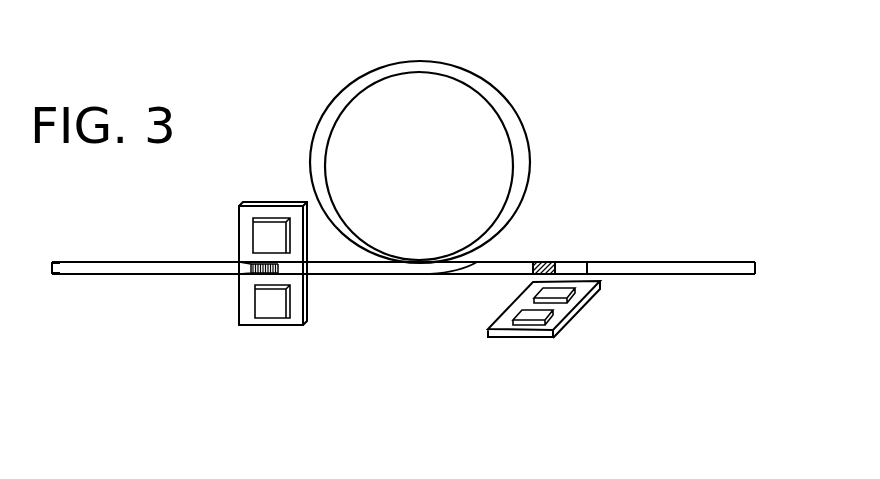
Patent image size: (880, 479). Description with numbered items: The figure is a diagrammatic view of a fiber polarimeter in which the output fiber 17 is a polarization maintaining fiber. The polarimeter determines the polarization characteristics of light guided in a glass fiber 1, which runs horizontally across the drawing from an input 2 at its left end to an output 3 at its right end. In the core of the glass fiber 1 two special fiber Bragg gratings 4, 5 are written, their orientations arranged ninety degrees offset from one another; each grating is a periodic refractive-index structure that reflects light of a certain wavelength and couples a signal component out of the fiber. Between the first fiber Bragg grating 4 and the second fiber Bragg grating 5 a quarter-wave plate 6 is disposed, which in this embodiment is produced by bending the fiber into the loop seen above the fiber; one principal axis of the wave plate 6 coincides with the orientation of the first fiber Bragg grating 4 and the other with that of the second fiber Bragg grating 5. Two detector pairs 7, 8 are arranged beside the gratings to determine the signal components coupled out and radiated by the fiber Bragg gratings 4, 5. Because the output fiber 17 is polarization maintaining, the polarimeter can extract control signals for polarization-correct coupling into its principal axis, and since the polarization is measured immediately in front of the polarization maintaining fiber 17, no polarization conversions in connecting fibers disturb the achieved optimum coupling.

The glass fiber 1 is at (140, 274).
The input 2 is at (51, 274).
The output 3 is at (757, 266).
The first fiber Bragg grating 4 is at (250, 276).
The second fiber Bragg grating 5 is at (548, 262).
The λ/4 wave plate 6 is at (350, 82).
The first detector pair 7 is at (250, 327).
The second detector pair 8 is at (500, 339).
The output fiber 17 is at (653, 263).